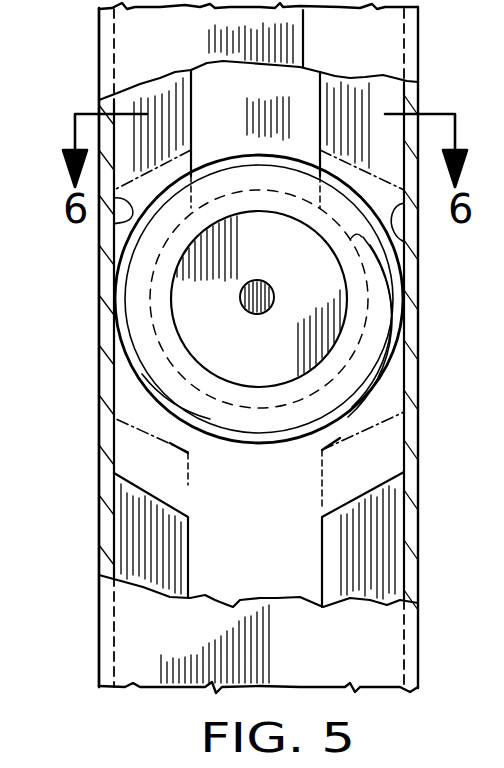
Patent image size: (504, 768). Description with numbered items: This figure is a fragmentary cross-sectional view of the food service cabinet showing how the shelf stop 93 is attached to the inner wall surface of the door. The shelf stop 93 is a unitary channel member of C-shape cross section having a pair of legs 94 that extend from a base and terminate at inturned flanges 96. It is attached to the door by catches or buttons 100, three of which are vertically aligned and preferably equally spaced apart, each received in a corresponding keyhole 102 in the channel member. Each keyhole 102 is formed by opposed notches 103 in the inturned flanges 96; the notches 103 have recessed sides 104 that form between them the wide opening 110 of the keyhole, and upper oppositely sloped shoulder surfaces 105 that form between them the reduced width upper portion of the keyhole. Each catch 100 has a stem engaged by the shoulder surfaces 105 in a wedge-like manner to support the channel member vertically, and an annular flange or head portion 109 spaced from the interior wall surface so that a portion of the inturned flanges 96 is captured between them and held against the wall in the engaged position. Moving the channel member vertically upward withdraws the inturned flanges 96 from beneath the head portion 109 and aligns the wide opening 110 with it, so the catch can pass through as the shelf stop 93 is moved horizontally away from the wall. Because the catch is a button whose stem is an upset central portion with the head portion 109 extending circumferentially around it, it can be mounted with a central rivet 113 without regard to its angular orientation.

The shelf stop 93 is at (99, 525).
The legs 94 is at (100, 378).
The inturned flanges 96 is at (147, 578).
The catches or buttons 100 is at (237, 443).
The keyhole 102 is at (141, 438).
The notches 103 is at (167, 466).
The recessed sides 104 is at (131, 200).
The shoulder surfaces 105 is at (332, 266).
The head portion 109 is at (383, 373).
The wide opening 110 is at (378, 424).
The central rivet 113 is at (258, 315).